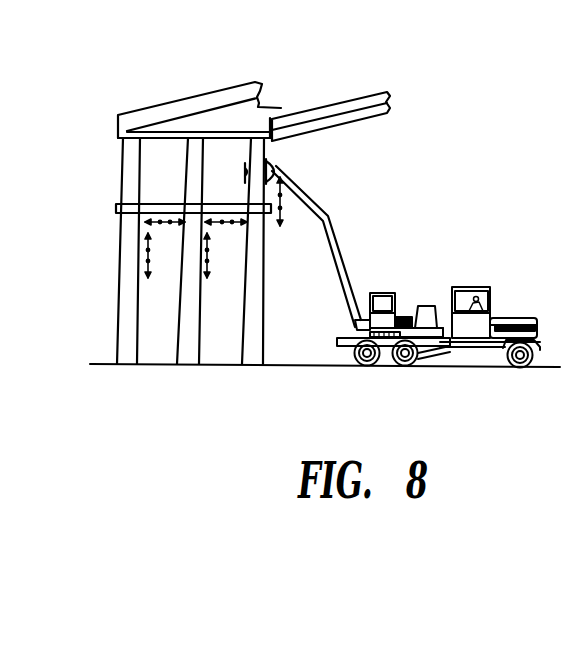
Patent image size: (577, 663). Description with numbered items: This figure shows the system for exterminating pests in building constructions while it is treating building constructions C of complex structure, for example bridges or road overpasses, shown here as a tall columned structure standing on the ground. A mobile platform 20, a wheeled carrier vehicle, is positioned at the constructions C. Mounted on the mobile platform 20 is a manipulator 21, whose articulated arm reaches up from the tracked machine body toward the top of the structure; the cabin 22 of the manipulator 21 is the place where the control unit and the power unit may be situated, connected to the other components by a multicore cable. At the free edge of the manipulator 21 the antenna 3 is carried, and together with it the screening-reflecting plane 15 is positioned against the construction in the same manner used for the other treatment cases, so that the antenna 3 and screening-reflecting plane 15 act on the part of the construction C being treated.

The screening-reflecting plane 15 is at (243, 170).
The building constructions C is at (130, 337).
The antenna 3 is at (276, 166).
The manipulator 21 is at (329, 222).
The cabin 22 is at (376, 294).
The mobile platform 20 is at (481, 288).